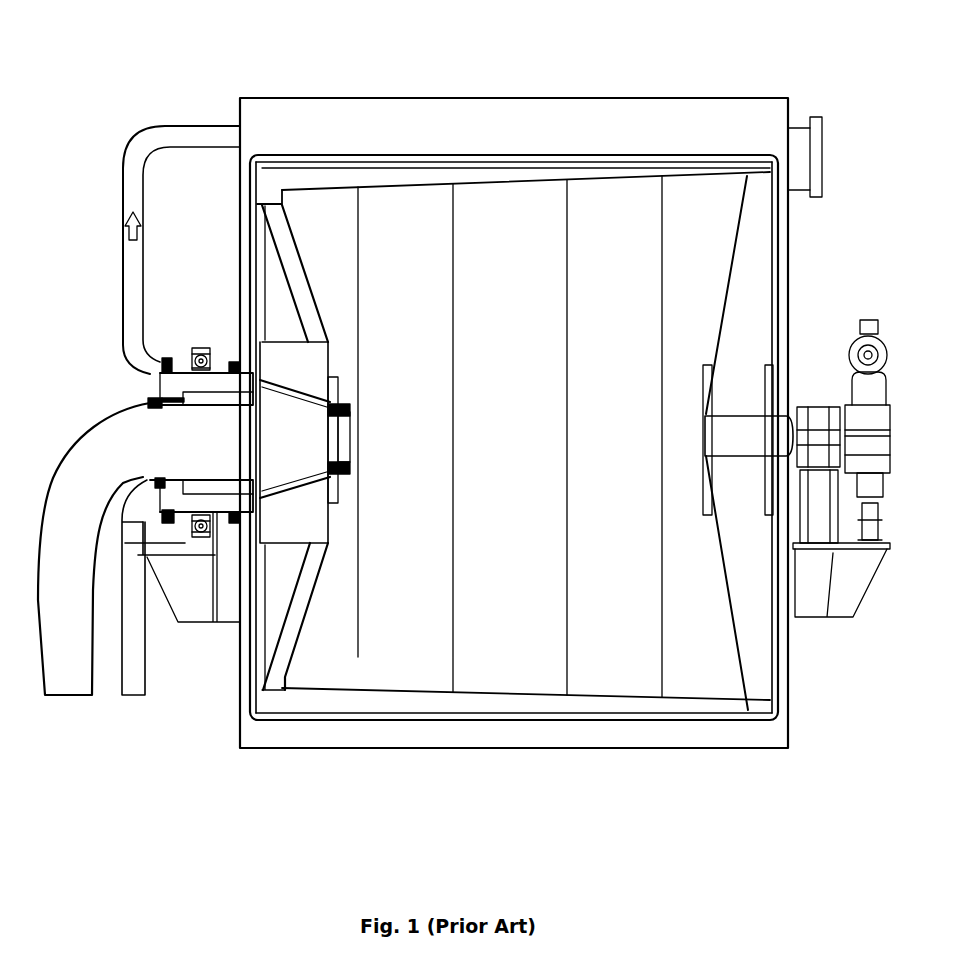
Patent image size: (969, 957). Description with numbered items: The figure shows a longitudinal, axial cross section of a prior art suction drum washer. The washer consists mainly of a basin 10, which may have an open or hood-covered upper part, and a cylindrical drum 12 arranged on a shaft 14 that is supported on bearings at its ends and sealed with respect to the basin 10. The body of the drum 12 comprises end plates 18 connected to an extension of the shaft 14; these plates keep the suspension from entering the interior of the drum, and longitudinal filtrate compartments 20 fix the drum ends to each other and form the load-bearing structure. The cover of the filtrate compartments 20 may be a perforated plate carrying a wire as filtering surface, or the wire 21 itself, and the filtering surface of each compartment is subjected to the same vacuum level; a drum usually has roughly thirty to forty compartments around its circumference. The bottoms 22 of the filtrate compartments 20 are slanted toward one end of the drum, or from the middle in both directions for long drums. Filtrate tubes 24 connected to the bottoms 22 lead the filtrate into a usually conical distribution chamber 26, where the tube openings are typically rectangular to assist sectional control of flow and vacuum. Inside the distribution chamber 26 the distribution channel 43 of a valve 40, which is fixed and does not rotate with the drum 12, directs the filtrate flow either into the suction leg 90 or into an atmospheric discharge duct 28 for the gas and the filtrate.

The basin 10 is at (280, 750).
The cylindrical drum 12 is at (507, 611).
The shaft 14 is at (736, 437).
The end plates 18 is at (253, 190).
The filtrate compartments 20 is at (298, 174).
The wire 21 is at (430, 152).
The bottoms of the filtrate compartments 22 is at (402, 182).
The filtrate tubes 24 is at (272, 292).
The distribution chamber 26 is at (334, 648).
The atmospheric discharge duct 28 is at (134, 622).
The valve 40 is at (260, 482).
The distribution channel 43 is at (193, 383).
The suction leg 90 is at (76, 650).